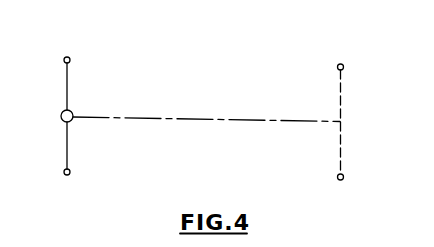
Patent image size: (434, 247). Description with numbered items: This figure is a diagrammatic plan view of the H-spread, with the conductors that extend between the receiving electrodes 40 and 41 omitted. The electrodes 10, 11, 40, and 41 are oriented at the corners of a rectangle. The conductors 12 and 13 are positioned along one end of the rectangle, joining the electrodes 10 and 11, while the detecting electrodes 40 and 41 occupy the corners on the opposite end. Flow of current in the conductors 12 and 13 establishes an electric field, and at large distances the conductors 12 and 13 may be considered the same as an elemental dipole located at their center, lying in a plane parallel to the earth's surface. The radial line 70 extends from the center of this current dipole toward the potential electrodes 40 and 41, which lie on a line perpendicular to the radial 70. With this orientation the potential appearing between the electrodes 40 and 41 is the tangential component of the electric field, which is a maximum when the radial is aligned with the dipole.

The electrode 10 is at (67, 57).
The electrode 11 is at (64, 172).
The conductor 12 is at (67, 85).
The conductor 13 is at (67, 138).
The radial line 70 is at (212, 121).
The receiving electrode 40 is at (364, 169).
The receiving electrode 41 is at (342, 64).